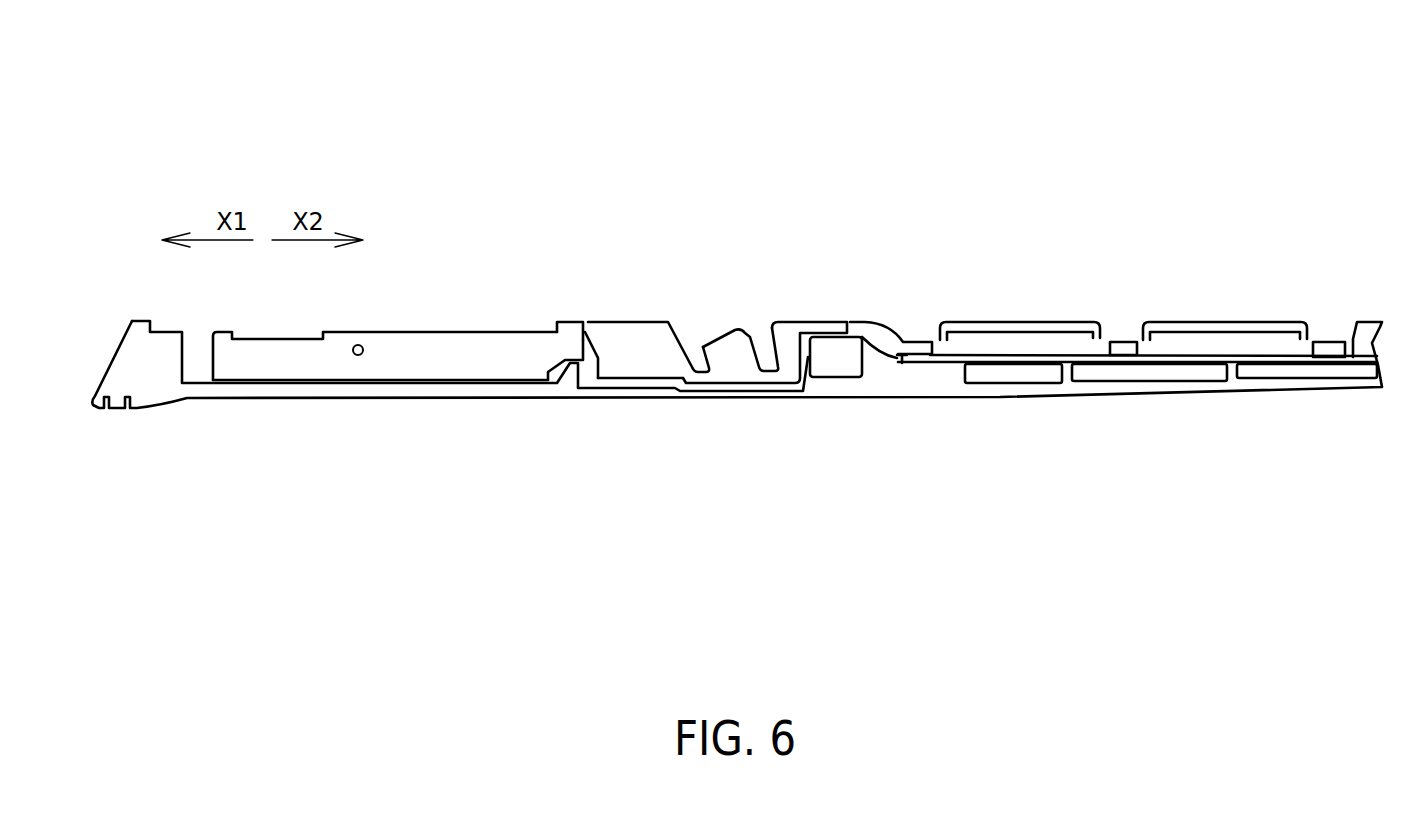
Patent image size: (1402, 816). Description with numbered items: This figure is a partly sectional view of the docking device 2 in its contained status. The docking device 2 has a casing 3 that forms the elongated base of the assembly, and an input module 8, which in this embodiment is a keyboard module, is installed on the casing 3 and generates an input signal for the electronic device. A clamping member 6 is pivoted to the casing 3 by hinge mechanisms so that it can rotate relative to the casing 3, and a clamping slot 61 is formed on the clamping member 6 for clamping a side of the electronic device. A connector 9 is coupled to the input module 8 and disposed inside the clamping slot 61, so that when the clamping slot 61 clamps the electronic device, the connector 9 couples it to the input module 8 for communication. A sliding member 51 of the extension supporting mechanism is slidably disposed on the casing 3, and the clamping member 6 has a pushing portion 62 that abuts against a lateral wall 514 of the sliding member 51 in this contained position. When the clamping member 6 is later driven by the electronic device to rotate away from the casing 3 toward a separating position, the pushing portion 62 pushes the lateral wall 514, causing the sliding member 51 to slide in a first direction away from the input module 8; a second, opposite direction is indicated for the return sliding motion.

The docking device 2 is at (737, 280).
The casing 3 is at (1158, 388).
The clamping member 6 is at (716, 276).
The input module 8 is at (1218, 327).
The connector 9 is at (735, 328).
The sliding member 51 is at (398, 311).
The clamping slot 61 is at (762, 328).
The pushing portion 62 is at (595, 335).
The lateral wall 514 is at (583, 337).